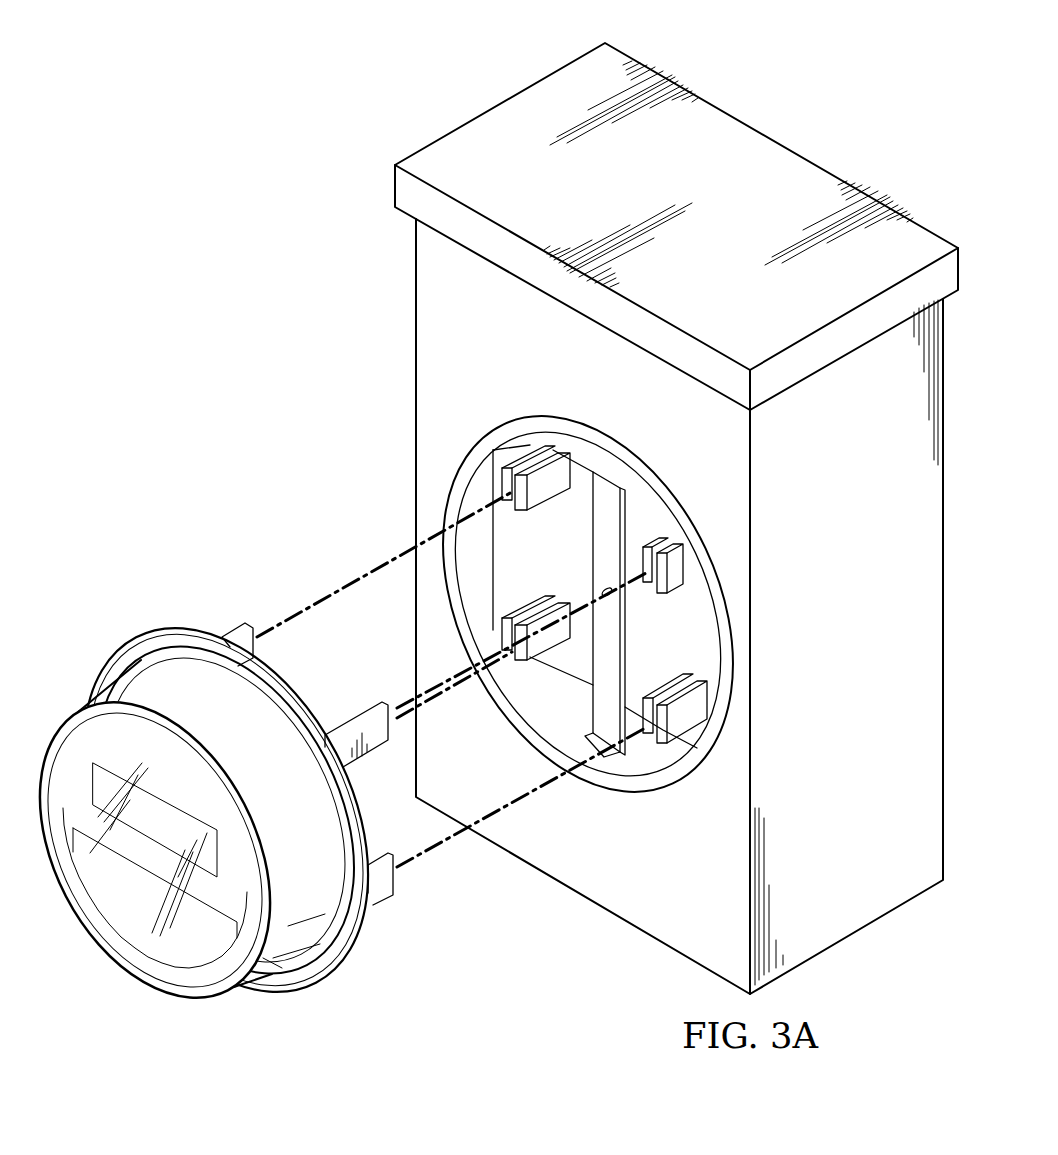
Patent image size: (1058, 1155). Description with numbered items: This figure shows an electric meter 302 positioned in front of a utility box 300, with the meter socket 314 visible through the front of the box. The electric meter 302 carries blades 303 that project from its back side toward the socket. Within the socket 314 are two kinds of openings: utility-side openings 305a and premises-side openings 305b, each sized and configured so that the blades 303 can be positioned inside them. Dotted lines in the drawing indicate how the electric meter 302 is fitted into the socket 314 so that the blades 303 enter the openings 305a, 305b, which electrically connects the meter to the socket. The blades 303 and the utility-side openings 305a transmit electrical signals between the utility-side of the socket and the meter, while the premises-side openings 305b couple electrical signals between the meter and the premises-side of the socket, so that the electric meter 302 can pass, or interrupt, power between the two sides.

The utility box 300 is at (777, 136).
The electric meter 302 is at (278, 995).
The blades 303 is at (405, 920).
The utility-side openings 305a is at (512, 600).
The premises-side openings 305b is at (650, 597).
The socket 314 is at (567, 691).